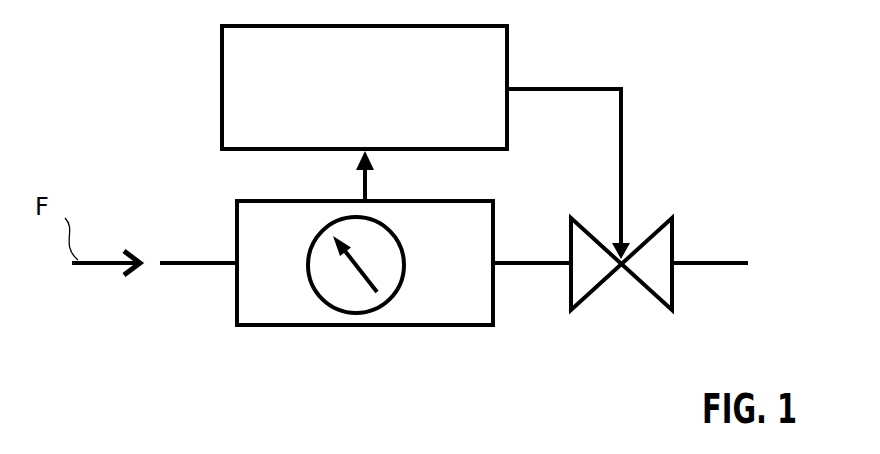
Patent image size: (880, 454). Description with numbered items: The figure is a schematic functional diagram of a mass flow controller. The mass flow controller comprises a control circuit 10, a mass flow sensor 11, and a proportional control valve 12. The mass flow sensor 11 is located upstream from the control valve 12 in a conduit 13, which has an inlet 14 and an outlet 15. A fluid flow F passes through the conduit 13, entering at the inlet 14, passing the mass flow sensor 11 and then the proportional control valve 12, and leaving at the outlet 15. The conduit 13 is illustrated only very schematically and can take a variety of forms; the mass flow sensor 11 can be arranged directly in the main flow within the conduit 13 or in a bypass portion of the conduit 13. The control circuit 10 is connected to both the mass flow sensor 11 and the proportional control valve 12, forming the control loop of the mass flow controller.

The control circuit 10 is at (240, 65).
The mass flow sensor 11 is at (253, 228).
The proportional control valve 12 is at (571, 248).
The conduit 13 is at (207, 290).
The inlet 14 is at (160, 268).
The outlet 15 is at (748, 268).